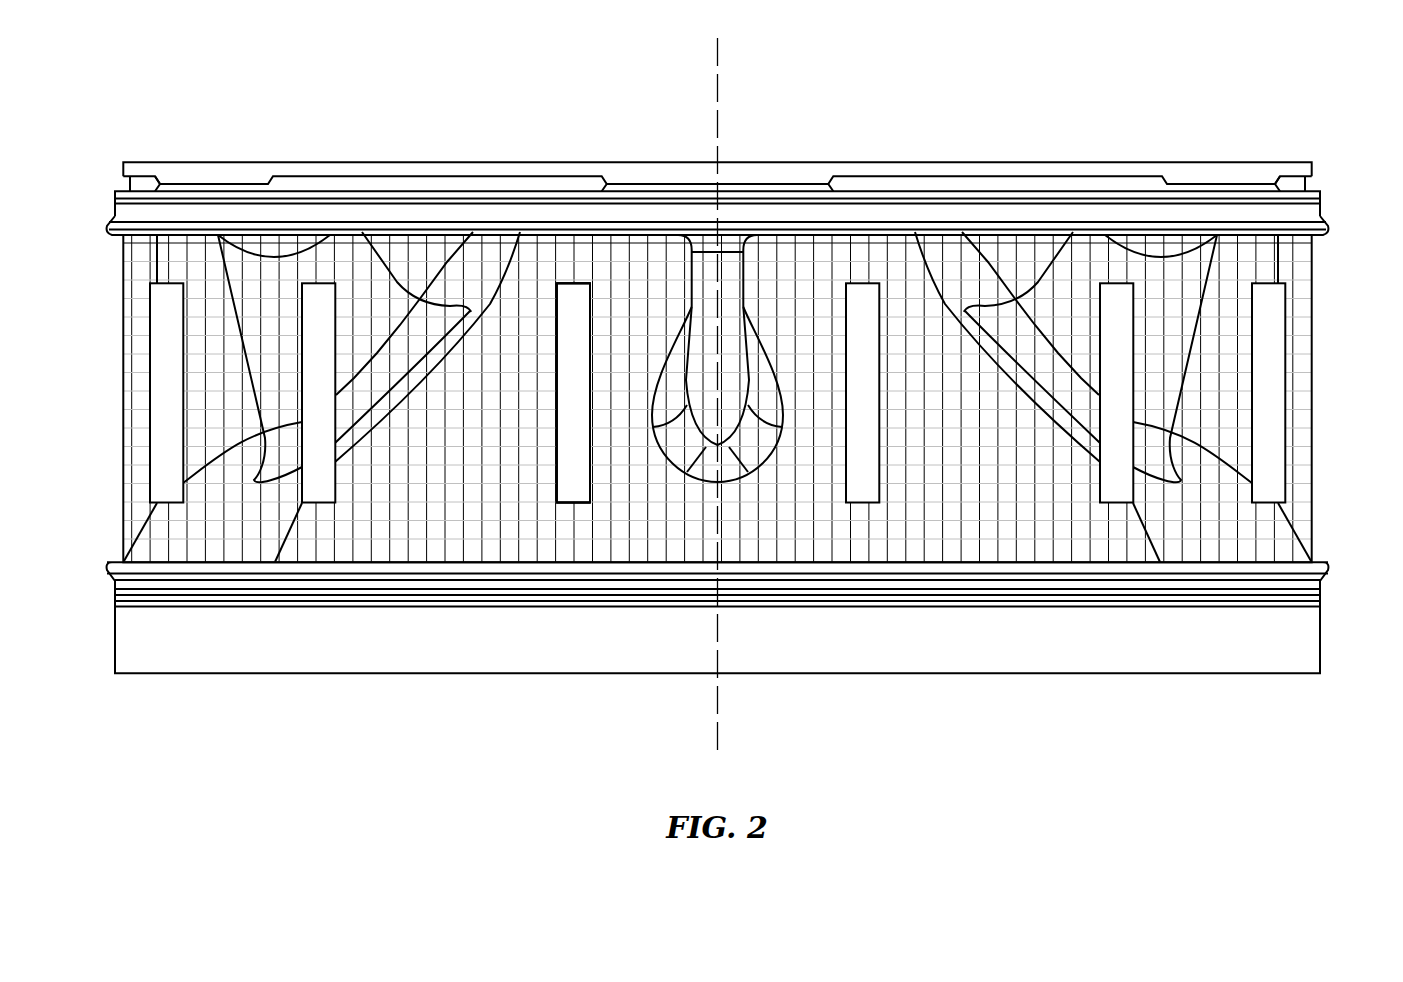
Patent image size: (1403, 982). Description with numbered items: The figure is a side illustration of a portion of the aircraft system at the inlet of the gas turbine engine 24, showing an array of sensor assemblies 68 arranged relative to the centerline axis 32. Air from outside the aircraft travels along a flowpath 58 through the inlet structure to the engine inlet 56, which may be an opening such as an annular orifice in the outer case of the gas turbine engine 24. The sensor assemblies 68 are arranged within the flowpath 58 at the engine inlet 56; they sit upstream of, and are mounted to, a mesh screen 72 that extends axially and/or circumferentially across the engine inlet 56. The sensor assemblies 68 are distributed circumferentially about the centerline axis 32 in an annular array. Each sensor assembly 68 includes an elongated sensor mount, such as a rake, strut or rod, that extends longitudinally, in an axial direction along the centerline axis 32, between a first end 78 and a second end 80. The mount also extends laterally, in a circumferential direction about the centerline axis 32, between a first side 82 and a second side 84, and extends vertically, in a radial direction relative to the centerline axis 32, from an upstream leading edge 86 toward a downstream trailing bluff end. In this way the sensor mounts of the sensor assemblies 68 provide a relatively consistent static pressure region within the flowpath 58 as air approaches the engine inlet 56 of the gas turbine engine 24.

The gas turbine engine 24 is at (1292, 137).
The centerline axis 32 is at (718, 50).
The engine inlet 56 is at (340, 567).
The flowpath 58 is at (490, 292).
The sensor assemblies 68 is at (318, 272).
The mesh screen 72 is at (935, 540).
The first end of the sensor mount 78 is at (567, 283).
The second end of the sensor mount 80 is at (573, 502).
The first side of the sensor mount 82 is at (557, 472).
The second side of the sensor mount 84 is at (590, 472).
The leading edge of the sensor mount 86 is at (578, 332).